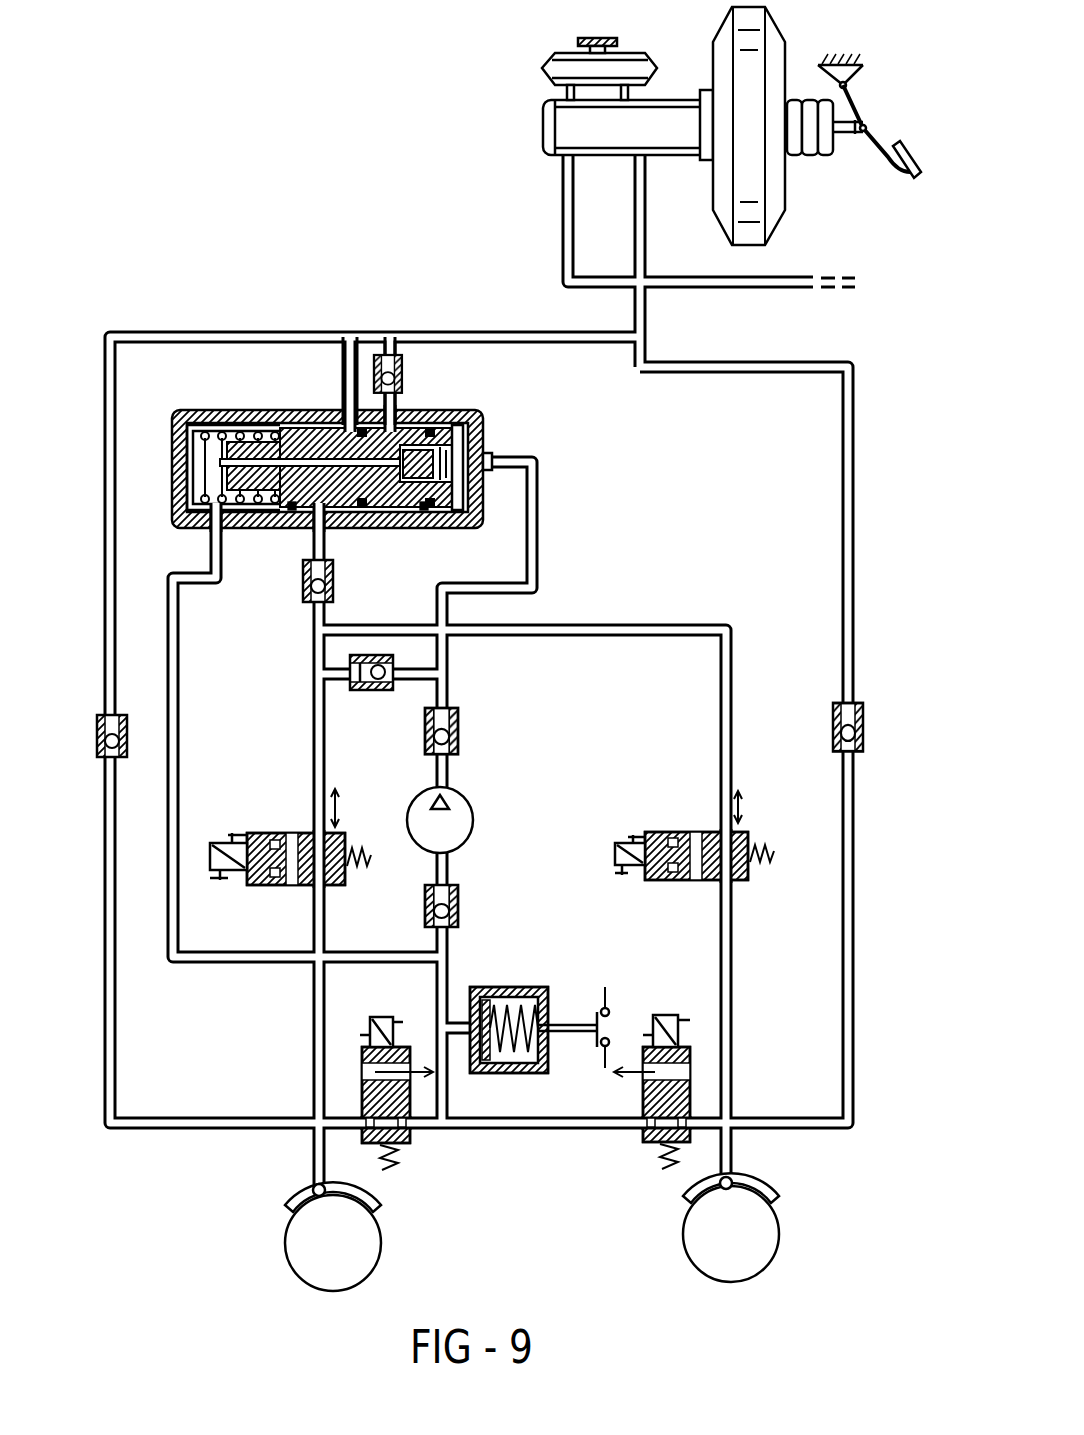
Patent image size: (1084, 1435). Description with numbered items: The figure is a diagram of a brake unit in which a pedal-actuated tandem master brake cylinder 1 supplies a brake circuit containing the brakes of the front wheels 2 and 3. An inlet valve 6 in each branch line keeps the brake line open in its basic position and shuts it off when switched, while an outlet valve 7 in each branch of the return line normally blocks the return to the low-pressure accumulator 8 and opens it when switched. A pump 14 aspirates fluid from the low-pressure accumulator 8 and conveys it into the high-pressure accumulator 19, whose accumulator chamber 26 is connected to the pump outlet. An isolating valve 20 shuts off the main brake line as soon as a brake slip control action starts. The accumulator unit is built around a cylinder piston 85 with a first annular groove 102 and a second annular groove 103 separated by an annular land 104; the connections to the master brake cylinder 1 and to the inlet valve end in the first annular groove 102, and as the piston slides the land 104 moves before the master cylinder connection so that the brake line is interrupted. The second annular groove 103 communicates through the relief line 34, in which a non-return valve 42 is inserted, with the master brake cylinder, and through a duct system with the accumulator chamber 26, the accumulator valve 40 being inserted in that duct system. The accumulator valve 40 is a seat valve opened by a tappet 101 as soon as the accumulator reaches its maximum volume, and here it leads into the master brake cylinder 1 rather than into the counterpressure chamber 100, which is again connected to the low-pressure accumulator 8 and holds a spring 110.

The tandem master brake cylinder 1 is at (543, 127).
The front wheel brake 2 is at (380, 1248).
The front wheel brake 3 is at (683, 1245).
The inlet valve 6 is at (292, 882).
The outlet valve 7 is at (412, 1140).
The low-pressure accumulator 8 is at (548, 1000).
The pump 14 is at (422, 808).
The high-pressure accumulator 19 is at (490, 452).
The isolating valve 20 is at (318, 407).
The accumulator chamber 26 is at (465, 500).
The relief line 34 is at (395, 403).
The accumulator valve 40 is at (447, 427).
The non-return valve 42 is at (398, 392).
The cylinder piston 85 is at (303, 500).
The counterpressure chamber 100 is at (210, 497).
The tappet 101 is at (283, 432).
The first annular groove 102 is at (338, 505).
The second annular groove 103 is at (428, 505).
The annular land 104 is at (358, 408).
The spring 110 is at (180, 467).